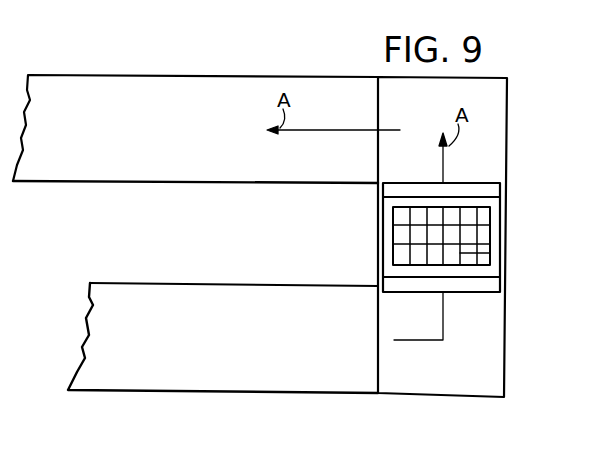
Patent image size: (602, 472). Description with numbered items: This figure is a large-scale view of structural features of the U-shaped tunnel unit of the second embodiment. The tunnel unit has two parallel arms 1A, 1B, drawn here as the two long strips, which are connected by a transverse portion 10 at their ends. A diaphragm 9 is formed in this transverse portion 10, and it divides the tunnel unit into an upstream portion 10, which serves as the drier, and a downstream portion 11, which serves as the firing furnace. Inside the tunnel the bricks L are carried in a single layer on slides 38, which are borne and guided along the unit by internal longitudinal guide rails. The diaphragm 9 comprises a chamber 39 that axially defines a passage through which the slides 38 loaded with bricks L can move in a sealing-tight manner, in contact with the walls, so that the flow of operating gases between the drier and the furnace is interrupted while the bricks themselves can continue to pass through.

The parallel arm 1A is at (142, 393).
The parallel arm 1B is at (207, 76).
The diaphragm 9 is at (509, 190).
The transverse portion 10 is at (212, 306).
The downstream portion 11 is at (158, 157).
The slide 38 is at (393, 238).
The chamber 39 is at (494, 237).
The bricks L is at (472, 254).